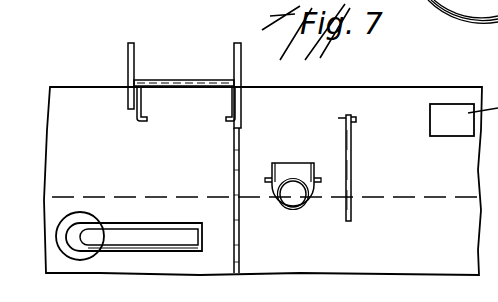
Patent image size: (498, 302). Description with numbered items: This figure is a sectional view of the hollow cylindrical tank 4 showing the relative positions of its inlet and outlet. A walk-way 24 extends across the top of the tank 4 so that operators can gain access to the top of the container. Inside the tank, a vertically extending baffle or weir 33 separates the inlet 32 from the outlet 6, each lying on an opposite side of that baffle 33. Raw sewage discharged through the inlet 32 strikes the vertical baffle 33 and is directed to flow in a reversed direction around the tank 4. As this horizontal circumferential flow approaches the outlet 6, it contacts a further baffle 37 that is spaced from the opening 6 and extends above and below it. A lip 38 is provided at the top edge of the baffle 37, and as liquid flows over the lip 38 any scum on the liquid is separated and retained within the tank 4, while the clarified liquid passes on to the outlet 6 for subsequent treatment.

The hollow cylindrical tank 4 is at (428, 2).
The outlet 6 is at (296, 182).
The walk-way 24 is at (170, 80).
The inlet 32 is at (98, 232).
The vertical baffle 33 is at (234, 172).
The baffle 37 is at (346, 118).
The lip 38 is at (356, 116).